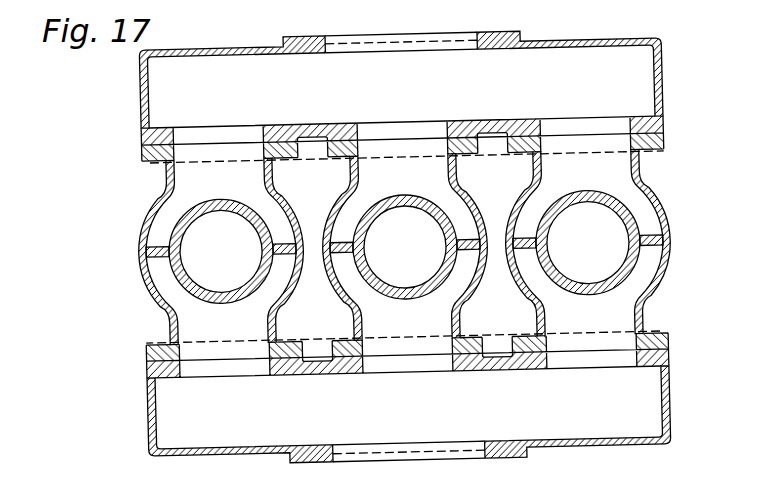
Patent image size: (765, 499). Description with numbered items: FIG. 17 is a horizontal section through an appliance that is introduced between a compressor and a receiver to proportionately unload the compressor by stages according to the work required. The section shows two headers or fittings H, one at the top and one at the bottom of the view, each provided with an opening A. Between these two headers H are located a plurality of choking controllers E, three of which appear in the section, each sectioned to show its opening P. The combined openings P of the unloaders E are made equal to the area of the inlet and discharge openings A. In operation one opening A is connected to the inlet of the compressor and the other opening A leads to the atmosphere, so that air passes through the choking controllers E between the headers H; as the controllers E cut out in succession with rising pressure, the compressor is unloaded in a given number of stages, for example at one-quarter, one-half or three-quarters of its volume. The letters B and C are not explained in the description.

The opening A is at (404, 249).
The lower chamber B is at (408, 379).
The upper chamber C is at (402, 117).
The choking controller E is at (416, 246).
The header H is at (421, 246).
The opening of unloader P is at (404, 246).